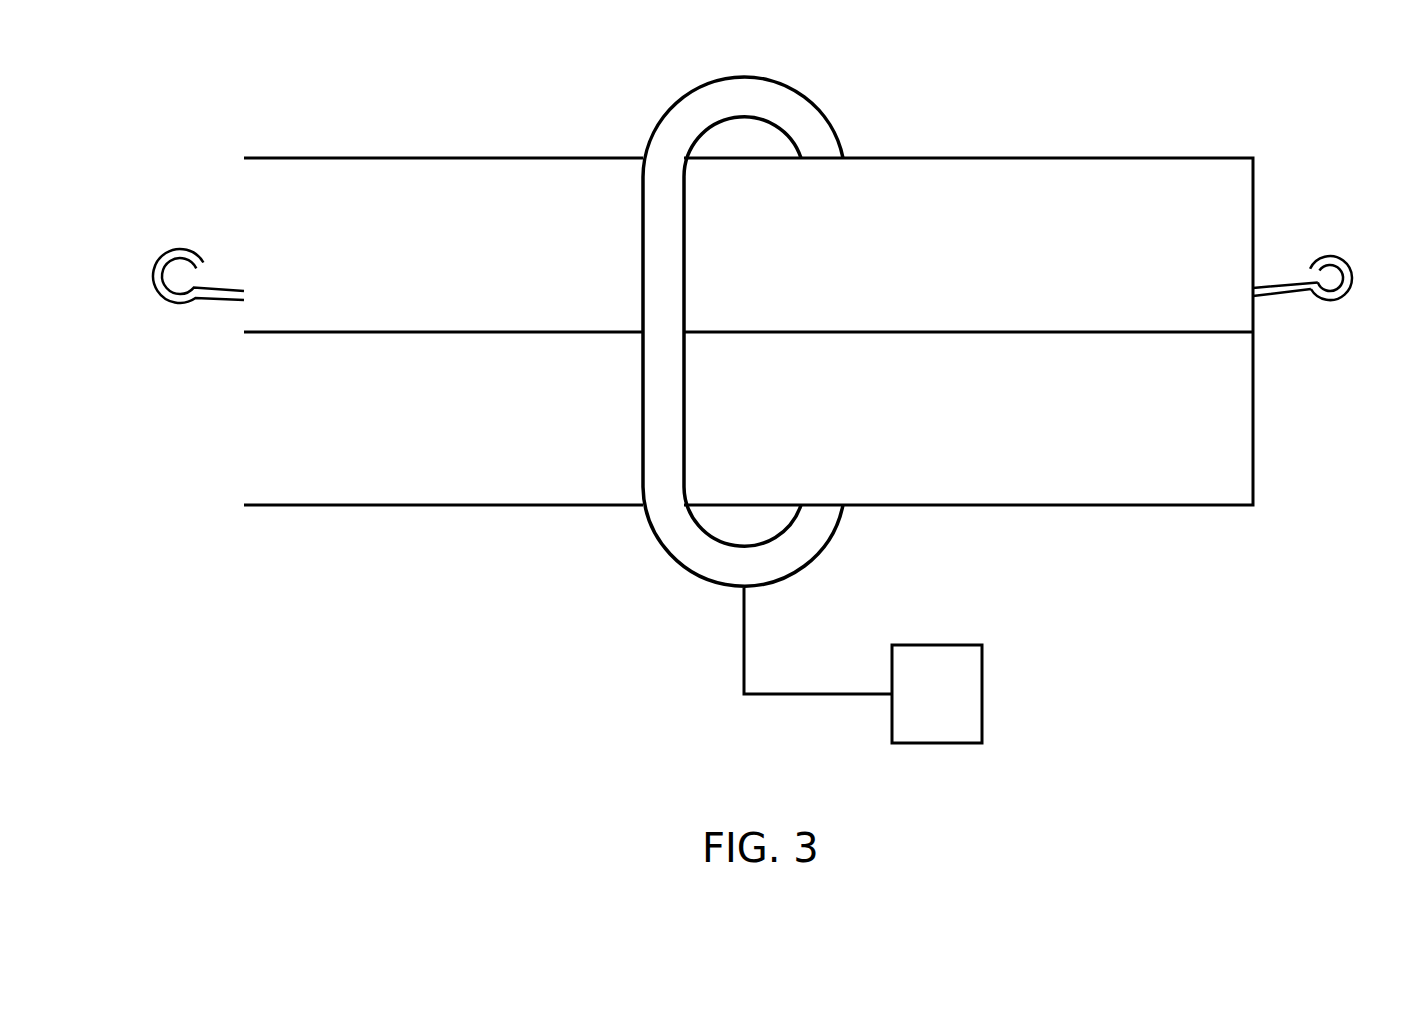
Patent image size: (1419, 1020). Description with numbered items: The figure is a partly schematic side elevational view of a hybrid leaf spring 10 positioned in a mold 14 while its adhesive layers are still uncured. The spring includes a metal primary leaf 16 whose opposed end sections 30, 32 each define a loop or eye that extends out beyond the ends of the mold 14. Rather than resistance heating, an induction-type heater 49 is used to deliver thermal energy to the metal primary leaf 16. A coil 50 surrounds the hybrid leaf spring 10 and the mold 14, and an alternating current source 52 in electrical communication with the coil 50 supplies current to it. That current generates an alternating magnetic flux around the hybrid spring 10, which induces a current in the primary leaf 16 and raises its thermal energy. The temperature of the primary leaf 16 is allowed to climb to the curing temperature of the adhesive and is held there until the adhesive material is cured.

The hybrid leaf spring 10 is at (762, 286).
The mold 14 is at (315, 126).
The primary leaf 16 is at (1287, 300).
The first end section 30 is at (176, 231).
The second end section 32 is at (1335, 266).
The induction-type heater 49 is at (703, 670).
The coil 50 is at (695, 113).
The alternating current source 52 is at (938, 681).